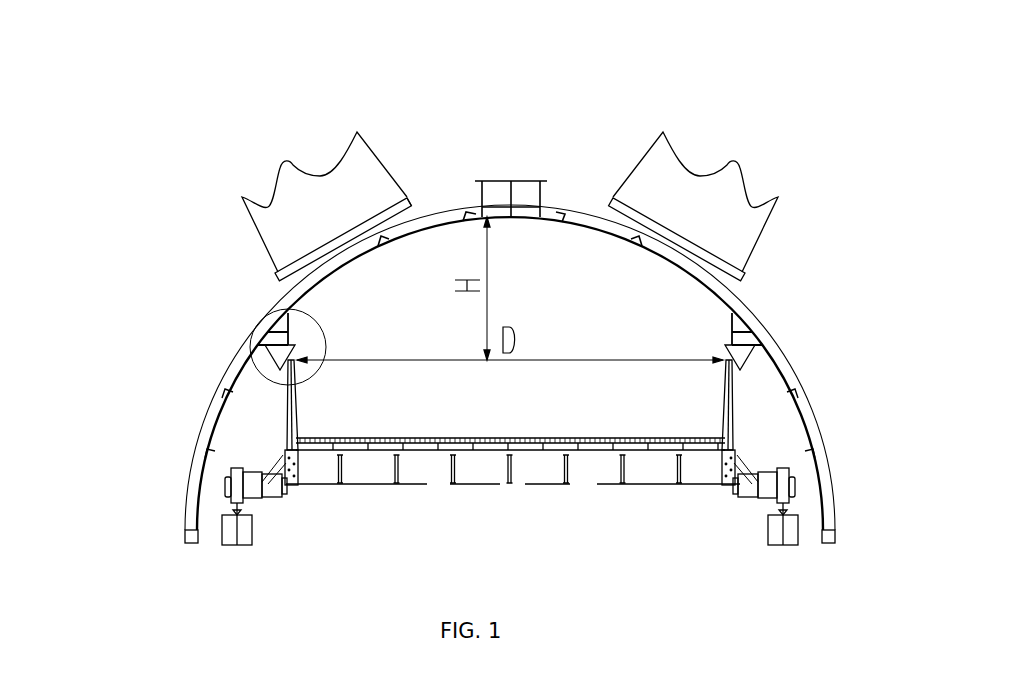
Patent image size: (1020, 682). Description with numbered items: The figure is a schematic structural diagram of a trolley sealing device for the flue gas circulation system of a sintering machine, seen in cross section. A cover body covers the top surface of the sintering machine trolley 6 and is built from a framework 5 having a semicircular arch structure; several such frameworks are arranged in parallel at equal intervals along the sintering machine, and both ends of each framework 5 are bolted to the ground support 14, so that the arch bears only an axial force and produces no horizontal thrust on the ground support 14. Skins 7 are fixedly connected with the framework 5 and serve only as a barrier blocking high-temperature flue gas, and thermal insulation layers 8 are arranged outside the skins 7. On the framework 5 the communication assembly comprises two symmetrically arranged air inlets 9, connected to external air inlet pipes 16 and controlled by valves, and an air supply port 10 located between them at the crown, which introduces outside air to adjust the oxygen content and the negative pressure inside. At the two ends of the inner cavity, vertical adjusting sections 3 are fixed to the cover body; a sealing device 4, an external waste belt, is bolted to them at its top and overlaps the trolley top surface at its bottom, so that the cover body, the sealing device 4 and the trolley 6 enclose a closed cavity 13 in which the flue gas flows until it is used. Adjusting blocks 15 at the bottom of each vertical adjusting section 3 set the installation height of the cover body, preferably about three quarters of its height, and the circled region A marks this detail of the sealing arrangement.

The vertical adjusting section 3 is at (285, 328).
The sealing device 4 is at (740, 370).
The framework 5 is at (228, 380).
The sintering machine trolley 6 is at (727, 435).
The skin 7 is at (432, 213).
The thermal insulation layer 8 is at (577, 210).
The air inlet 9 is at (323, 255).
The air supply port 10 is at (503, 181).
The closed cavity 13 is at (603, 297).
The ground support 14 is at (184, 538).
The adjusting block 15 is at (725, 343).
The external air inlet pipe 16 is at (320, 197).
The detail region A is at (265, 360).